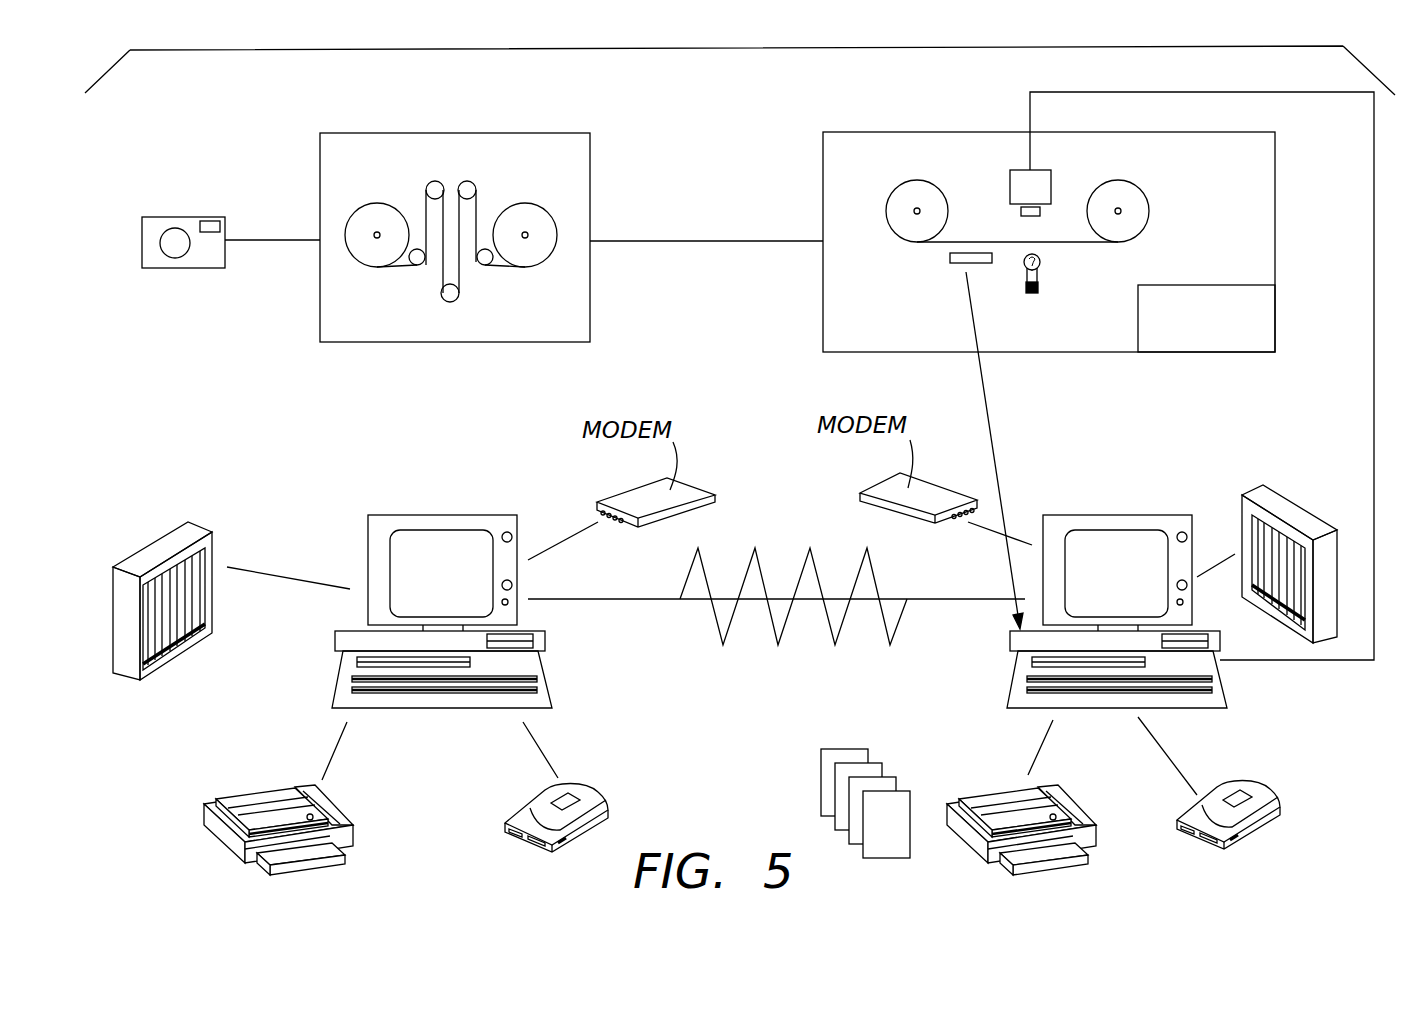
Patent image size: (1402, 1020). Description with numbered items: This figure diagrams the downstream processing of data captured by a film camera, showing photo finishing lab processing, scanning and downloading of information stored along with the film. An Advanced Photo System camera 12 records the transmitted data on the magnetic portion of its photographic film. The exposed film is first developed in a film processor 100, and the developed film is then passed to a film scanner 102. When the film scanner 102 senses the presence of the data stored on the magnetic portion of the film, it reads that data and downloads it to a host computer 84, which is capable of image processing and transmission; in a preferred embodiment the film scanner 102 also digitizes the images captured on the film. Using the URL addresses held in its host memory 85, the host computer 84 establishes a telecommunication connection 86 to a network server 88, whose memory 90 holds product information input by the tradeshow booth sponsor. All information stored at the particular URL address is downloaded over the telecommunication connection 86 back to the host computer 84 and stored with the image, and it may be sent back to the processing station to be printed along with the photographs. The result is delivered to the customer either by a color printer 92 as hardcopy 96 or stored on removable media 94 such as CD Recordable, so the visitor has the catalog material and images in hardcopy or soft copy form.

The Advanced Photo System camera 12 is at (178, 217).
The film processor 100 is at (438, 132).
The film scanner 102 is at (870, 130).
The host computer 84 is at (1105, 523).
The host memory 85 is at (1285, 498).
The telecommunication connection 86 is at (757, 548).
The network server 88 is at (453, 515).
The memory 90 is at (160, 543).
The color printer 92 is at (252, 790).
The removable media 94 is at (557, 793).
The hardcopy 96 is at (833, 752).